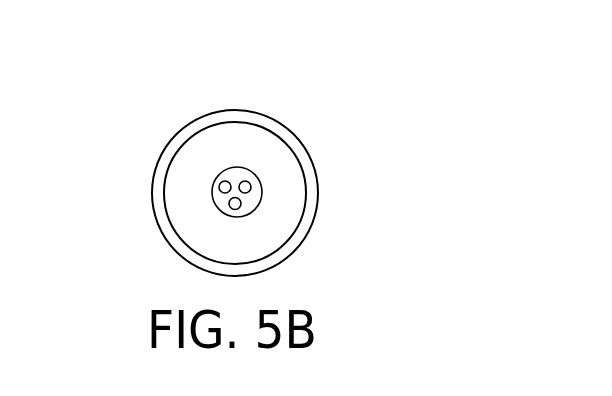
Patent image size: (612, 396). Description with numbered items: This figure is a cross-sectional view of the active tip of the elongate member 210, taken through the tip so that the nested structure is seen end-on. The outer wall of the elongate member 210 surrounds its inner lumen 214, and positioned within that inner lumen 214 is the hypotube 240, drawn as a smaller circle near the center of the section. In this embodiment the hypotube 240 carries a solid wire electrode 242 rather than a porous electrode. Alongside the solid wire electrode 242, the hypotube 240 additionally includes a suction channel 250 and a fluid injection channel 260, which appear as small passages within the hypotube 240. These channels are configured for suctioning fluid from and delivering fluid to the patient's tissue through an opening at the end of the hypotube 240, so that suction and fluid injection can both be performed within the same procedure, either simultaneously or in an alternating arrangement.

The elongate member 210 is at (307, 152).
The inner lumen 214 is at (253, 138).
The hypotube 240 is at (212, 192).
The solid wire electrode 242 is at (241, 201).
The suction channel 250 is at (250, 182).
The fluid injection channel 260 is at (212, 189).